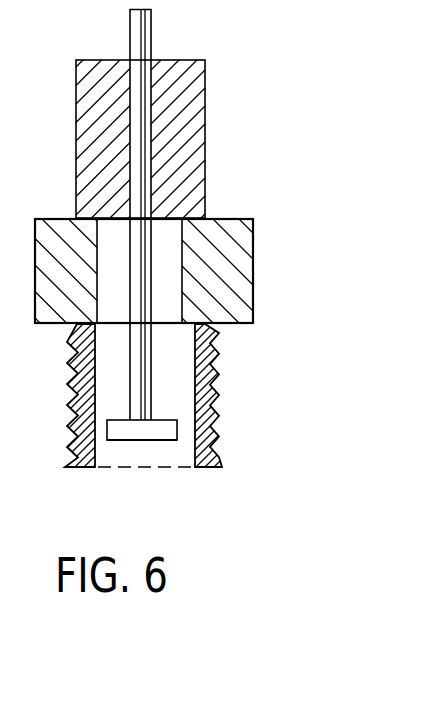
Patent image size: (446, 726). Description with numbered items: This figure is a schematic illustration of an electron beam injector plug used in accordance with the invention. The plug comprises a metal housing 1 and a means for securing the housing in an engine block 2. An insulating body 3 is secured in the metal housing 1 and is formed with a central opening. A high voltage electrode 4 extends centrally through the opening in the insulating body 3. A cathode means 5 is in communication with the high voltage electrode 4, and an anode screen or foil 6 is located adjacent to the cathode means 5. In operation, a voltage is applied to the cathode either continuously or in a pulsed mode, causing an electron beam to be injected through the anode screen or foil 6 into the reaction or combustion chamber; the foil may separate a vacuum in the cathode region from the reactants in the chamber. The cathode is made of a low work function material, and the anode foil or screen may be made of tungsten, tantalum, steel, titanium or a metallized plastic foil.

The metal housing 1 is at (247, 261).
The means for securing the housing in an engine block 2 is at (215, 379).
The insulating body 3 is at (198, 126).
The high voltage electrode 4 is at (137, 24).
The cathode means 5 is at (148, 433).
The anode screen or foil 6 is at (163, 467).